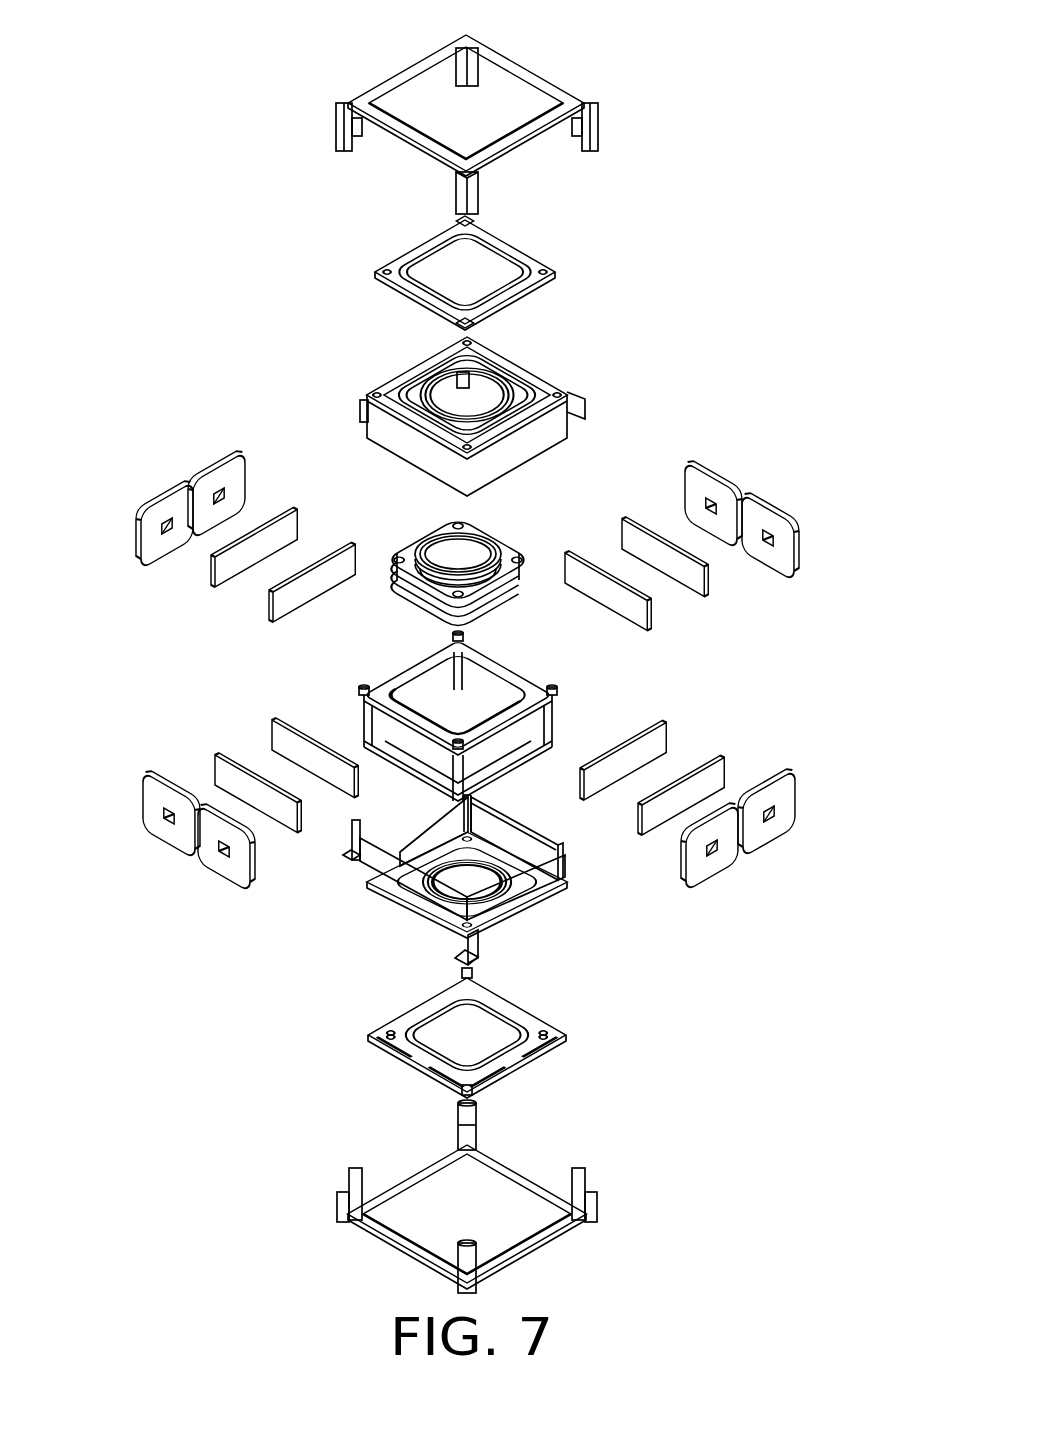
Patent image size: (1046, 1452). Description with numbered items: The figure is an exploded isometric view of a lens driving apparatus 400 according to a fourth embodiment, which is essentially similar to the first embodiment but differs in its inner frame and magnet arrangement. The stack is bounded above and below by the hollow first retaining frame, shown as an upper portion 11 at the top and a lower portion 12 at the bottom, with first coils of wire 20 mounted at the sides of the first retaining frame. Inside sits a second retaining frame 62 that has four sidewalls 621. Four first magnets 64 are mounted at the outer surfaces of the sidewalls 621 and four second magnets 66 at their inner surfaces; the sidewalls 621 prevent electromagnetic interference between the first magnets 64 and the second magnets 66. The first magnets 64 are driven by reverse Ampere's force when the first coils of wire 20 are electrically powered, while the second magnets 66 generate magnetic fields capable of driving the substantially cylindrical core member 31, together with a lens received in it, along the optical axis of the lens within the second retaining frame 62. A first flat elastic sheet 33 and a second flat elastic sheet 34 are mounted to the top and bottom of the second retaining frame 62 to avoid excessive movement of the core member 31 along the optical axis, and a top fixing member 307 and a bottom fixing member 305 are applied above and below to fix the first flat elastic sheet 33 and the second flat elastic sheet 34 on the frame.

The lens driving apparatus 400 is at (148, 62).
The upper portion 11 is at (528, 75).
The top fixing member 307 is at (531, 253).
The first flat elastic sheet 33 is at (543, 396).
The core member 31 is at (492, 533).
The first coils of wire 20 is at (757, 520).
The second retaining frame 62 is at (506, 715).
The sidewalls 621 is at (535, 724).
The second magnets 66 is at (663, 743).
The first magnets 64 is at (720, 777).
The second flat elastic sheet 34 is at (517, 907).
The bottom fixing member 305 is at (518, 1010).
The lower portion 12 is at (528, 1180).